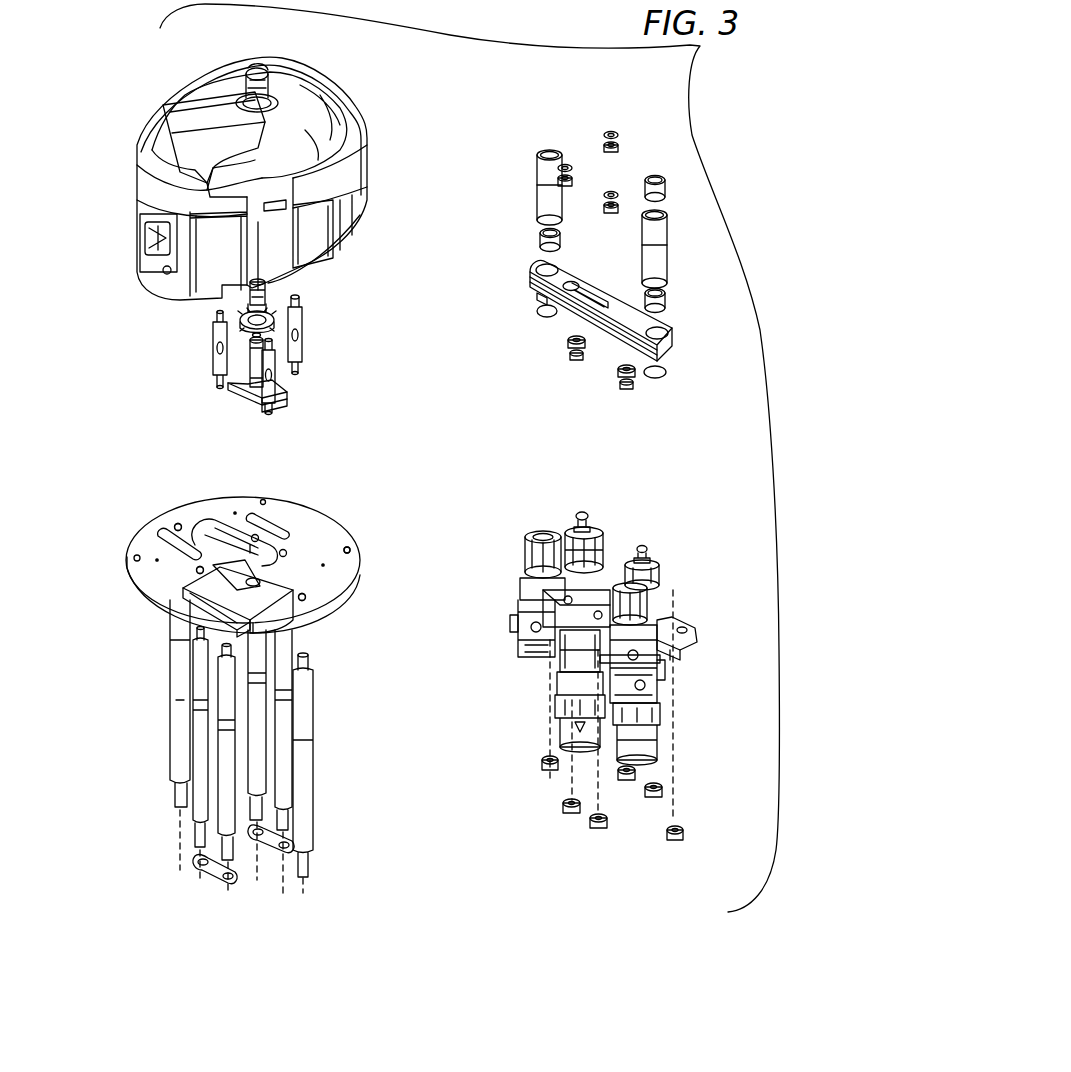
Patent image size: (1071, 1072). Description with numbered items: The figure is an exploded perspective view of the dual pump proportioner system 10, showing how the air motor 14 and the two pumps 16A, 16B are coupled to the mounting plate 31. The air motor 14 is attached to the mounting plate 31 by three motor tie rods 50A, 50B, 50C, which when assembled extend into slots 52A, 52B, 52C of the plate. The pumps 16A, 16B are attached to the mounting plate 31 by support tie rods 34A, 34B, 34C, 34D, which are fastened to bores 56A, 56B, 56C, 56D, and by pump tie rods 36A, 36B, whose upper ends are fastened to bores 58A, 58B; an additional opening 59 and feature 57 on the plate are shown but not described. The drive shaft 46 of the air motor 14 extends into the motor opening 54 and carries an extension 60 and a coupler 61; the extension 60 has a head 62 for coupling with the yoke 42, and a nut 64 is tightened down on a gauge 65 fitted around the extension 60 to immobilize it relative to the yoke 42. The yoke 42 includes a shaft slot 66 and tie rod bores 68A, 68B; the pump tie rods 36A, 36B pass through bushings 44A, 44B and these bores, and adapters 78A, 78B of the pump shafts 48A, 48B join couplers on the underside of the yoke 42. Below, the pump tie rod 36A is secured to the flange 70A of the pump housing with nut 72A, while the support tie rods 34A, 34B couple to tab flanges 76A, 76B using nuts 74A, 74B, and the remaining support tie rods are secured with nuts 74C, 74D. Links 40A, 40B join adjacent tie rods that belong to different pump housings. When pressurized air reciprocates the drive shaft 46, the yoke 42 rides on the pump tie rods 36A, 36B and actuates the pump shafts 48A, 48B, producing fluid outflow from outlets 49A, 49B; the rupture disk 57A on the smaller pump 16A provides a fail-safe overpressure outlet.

The dual pump proportioner system 10 is at (403, 110).
The air motor 14 is at (150, 106).
The drive shaft 46 is at (257, 283).
The coupler 61 is at (247, 302).
The nut 64 is at (285, 322).
The extension 60 is at (250, 357).
The head 62 is at (247, 390).
The gauge 65 is at (273, 392).
The motor tie rod 50A is at (300, 338).
The motor tie rod 50B is at (213, 345).
The motor tie rod 50C is at (273, 382).
The yoke 42 is at (540, 293).
The bushing 44A is at (662, 272).
The bushing 44B is at (537, 198).
The shaft slot 66 is at (598, 293).
The tie rod bore 68A is at (660, 332).
The tie rod bore 68B is at (548, 270).
The adapter 78A is at (620, 380).
The adapter 78B is at (570, 350).
The mounting plate 31 is at (303, 518).
The motor opening 54 is at (208, 527).
The slot 52A is at (267, 523).
The slot 52B is at (178, 545).
The slot 52C is at (343, 548).
The bore 56A is at (250, 573).
The bore 56B is at (200, 566).
The bore 56C is at (242, 533).
The bore 56D is at (283, 553).
The bore 58A is at (305, 597).
The bore 58B is at (177, 524).
The opening 59 is at (253, 580).
The bracket 57 is at (250, 603).
The support tie rod 34A is at (223, 773).
The support tie rod 34B is at (195, 735).
The support tie rod 34C is at (287, 727).
The support tie rod 34D is at (257, 697).
The pump tie rod 36A is at (308, 753).
The pump tie rod 36B is at (177, 668).
The link 40A is at (208, 867).
The link 40B is at (268, 840).
The pump shaft 48A is at (645, 565).
The pump shaft 48B is at (595, 523).
The outlet 49A is at (653, 680).
The outlet 49B is at (520, 632).
The flange 70A is at (685, 630).
The rupture disk 57A is at (660, 647).
The tab flange 76A is at (588, 623).
The tab flange 76B is at (560, 605).
The pump 16A is at (657, 742).
The pump 16B is at (562, 708).
The nut 72A is at (545, 767).
The nut 74A is at (597, 828).
The nut 74B is at (568, 812).
The nut 74C is at (653, 800).
The nut 74D is at (627, 783).